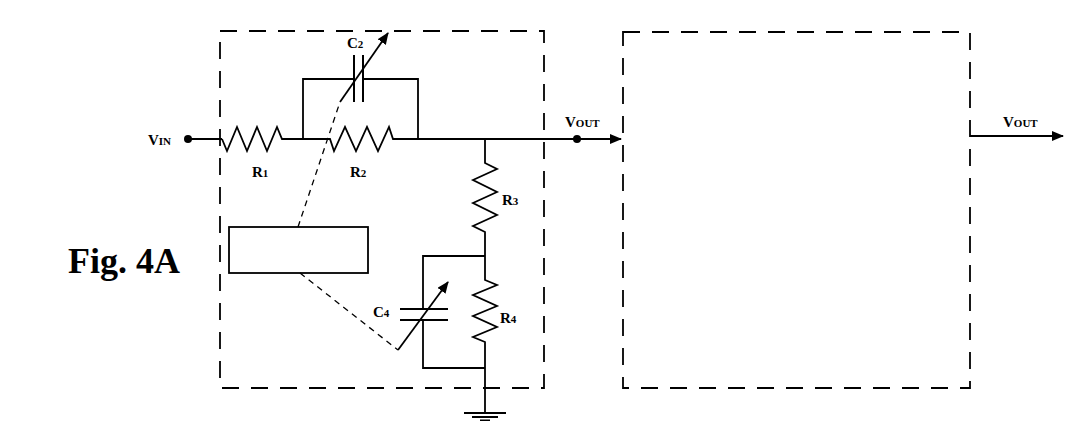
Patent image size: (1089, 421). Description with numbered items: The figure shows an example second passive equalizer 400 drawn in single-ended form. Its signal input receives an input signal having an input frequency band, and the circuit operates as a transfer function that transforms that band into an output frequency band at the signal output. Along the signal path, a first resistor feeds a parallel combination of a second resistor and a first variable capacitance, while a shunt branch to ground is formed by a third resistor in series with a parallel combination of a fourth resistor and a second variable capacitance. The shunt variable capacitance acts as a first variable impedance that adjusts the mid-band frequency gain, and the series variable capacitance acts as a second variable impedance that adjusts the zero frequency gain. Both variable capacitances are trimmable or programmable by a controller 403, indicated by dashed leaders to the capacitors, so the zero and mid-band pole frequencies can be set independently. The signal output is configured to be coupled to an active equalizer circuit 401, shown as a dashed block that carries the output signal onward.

The second passive equalizer 400 is at (382, 209).
The active equalizer circuit 401 is at (796, 210).
The controller 403 is at (313, 226).